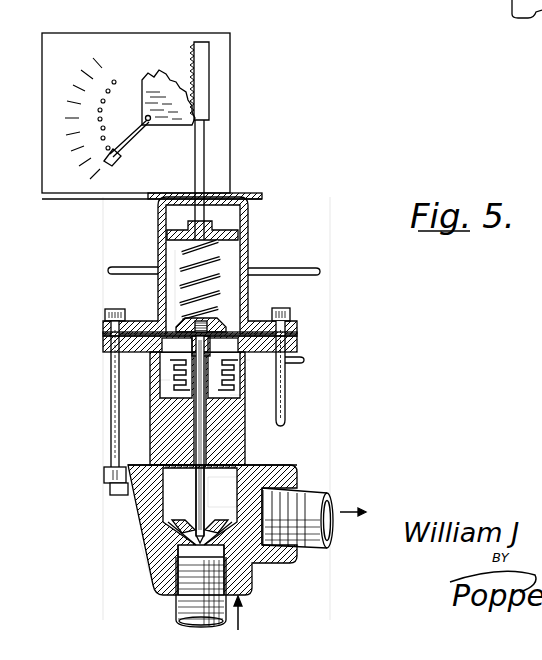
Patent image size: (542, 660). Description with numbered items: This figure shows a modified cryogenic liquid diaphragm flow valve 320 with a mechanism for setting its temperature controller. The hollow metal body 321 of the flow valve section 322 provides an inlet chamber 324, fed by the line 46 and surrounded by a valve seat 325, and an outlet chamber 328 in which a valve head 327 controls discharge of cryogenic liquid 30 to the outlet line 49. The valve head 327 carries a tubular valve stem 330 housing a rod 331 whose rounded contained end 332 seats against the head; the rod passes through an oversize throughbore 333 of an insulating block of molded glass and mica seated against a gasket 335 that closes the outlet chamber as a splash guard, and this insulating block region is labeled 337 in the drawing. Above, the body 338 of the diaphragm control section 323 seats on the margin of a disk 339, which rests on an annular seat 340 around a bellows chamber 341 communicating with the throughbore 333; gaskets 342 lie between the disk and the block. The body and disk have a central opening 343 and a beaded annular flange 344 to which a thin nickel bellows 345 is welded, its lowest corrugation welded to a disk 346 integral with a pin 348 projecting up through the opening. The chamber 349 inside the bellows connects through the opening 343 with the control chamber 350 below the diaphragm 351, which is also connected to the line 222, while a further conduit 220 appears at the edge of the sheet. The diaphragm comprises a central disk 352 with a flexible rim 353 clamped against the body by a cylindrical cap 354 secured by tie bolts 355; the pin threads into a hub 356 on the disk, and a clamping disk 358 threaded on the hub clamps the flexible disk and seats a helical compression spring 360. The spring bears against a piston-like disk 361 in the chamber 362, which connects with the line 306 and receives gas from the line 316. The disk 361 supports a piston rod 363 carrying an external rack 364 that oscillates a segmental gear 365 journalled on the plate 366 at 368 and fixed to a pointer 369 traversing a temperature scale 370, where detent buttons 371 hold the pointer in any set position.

The scale 370 is at (104, 61).
The detent button or depression 371 is at (106, 126).
The segmental gear 365 is at (170, 78).
The rack 364 is at (208, 84).
The plate 366 is at (220, 117).
The piston rod 363 is at (200, 160).
The journal 368 is at (149, 121).
The pointer 369 is at (121, 160).
The cryogenic liquid diaphragm flow valve 320 is at (304, 186).
The coaxially cylindrical cap 354 is at (157, 214).
The diaphragm control section 323 is at (157, 240).
The diaphragm 351 is at (168, 306).
The piston-like disk 361 is at (233, 233).
The helical compression spring 360 is at (228, 258).
The chamber 362 is at (170, 250).
The line 306 is at (106, 271).
The line 316 is at (299, 270).
The tie bolts 355 is at (291, 312).
The clamping disk 358 is at (178, 323).
The hub 356 is at (223, 315).
The flexible rim 353 is at (258, 316).
The body 338 is at (292, 341).
The valve body 337 is at (148, 443).
The chamber 349 is at (170, 400).
The pin 348 is at (167, 382).
The central metal disk 352 is at (177, 345).
The central opening 343 is at (223, 345).
The annular seat 340 is at (172, 367).
The metal bellows 345 is at (228, 382).
The diaphragm or control chamber 350 is at (150, 347).
The gaskets 342 is at (156, 361).
The annular flange 344 is at (180, 380).
The disk 339 is at (250, 363).
The bellows chamber 341 is at (235, 397).
The line 222 is at (299, 358).
The disk 346 is at (206, 400).
The flow valve section 322 is at (144, 519).
The hollow metal body 321 is at (152, 543).
The valve seat 325 is at (254, 563).
The outlet chamber 328 is at (165, 498).
The tubular valve stem 330 is at (190, 488).
The cryogenic liquid 30 is at (233, 515).
The valve head 327 is at (212, 523).
The rounded contained end 332 is at (201, 570).
The inlet chamber 324 is at (180, 553).
The oversize throughbore 333 is at (237, 437).
The rod 331 is at (241, 453).
The gasket 335 is at (263, 482).
The outlet line 49 is at (310, 544).
The line 46 is at (176, 608).
The conduit 220 is at (508, 3).